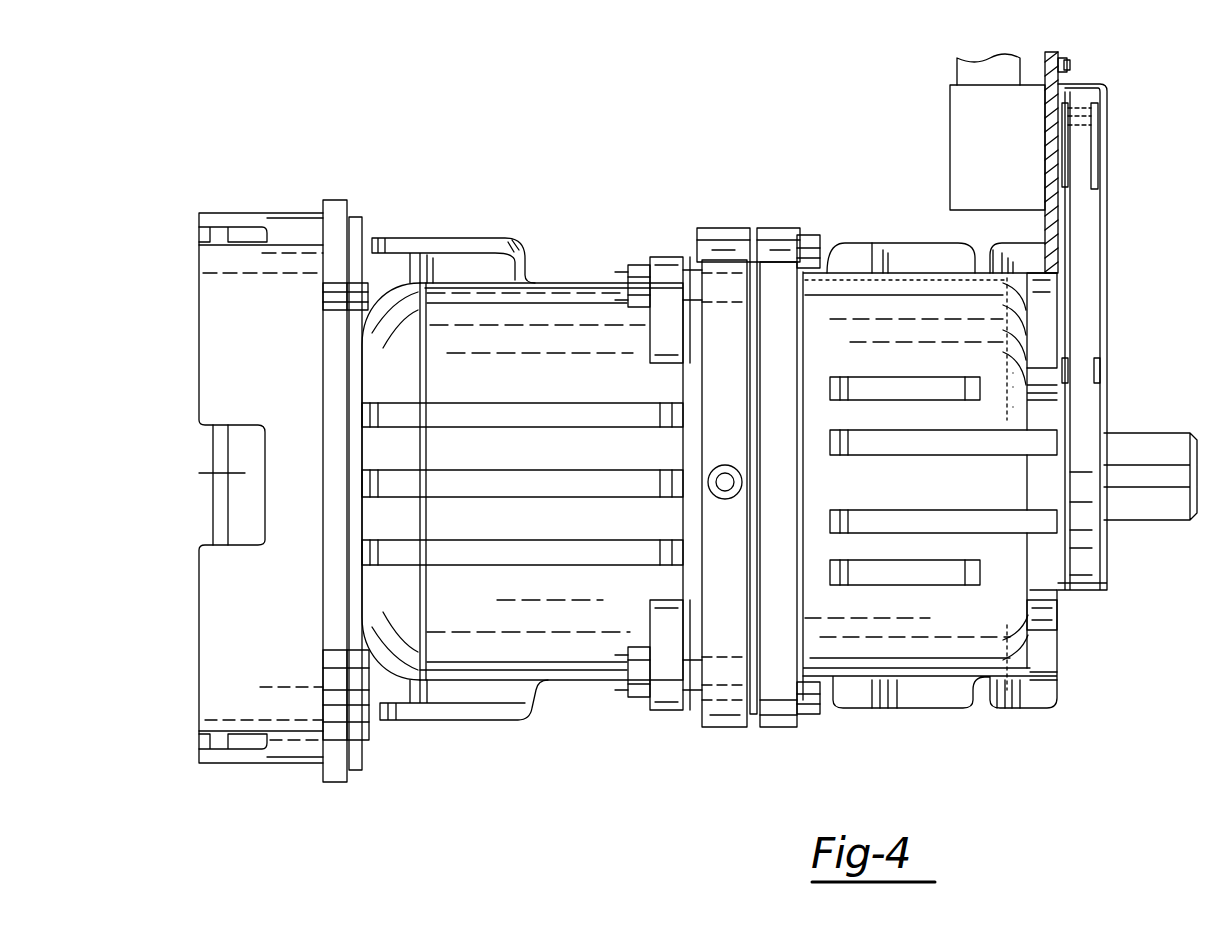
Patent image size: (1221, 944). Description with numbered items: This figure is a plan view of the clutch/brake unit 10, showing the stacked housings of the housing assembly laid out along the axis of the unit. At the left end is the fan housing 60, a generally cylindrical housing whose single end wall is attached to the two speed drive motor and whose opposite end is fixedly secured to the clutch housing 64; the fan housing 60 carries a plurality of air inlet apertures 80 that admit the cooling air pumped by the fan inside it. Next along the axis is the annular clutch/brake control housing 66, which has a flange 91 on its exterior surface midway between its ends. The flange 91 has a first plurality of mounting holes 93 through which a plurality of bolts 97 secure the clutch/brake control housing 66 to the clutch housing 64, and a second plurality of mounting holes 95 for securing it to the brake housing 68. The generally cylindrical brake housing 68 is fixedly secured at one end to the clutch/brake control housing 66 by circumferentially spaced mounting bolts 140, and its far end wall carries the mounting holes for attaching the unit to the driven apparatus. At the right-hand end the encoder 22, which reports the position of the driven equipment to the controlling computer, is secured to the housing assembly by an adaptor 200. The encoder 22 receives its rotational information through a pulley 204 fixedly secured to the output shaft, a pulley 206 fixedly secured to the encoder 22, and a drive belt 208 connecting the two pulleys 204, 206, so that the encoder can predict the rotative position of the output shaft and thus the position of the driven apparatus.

The clutch/brake unit 10 is at (494, 172).
The encoder 22 is at (962, 127).
The fan housing 60 is at (290, 768).
The clutch housing 64 is at (490, 712).
The clutch/brake control housing 66 is at (727, 463).
The brake housing 68 is at (930, 708).
The air inlet apertures 80 is at (236, 472).
The flange 91 is at (720, 230).
The first plurality of mounting holes 93 is at (713, 690).
The second plurality of mounting holes 95 is at (816, 478).
The bolts 97 is at (628, 270).
The mounting bolts 140 is at (815, 240).
The adaptor 200 is at (1058, 44).
The pulley 204 is at (1103, 555).
The pulley 206 is at (1095, 120).
The drive belt 208 is at (1129, 337).